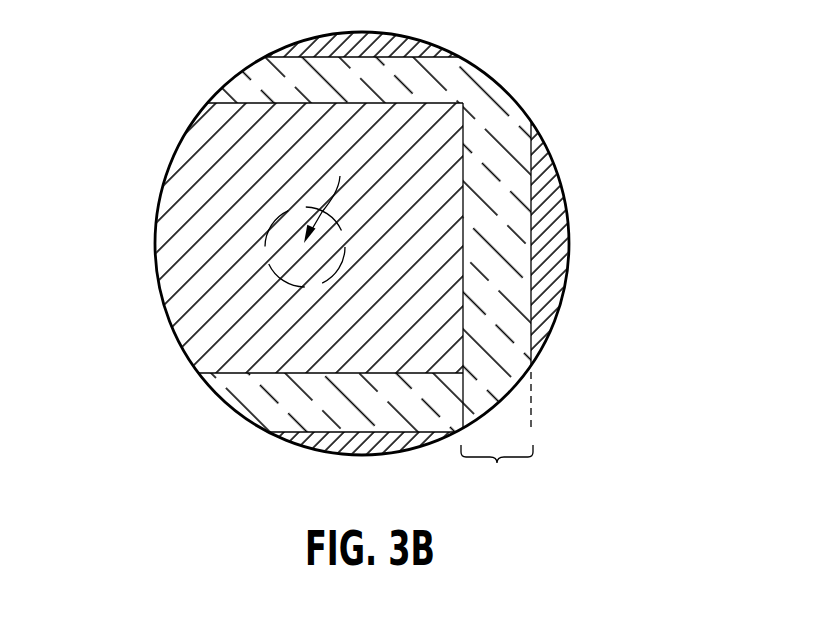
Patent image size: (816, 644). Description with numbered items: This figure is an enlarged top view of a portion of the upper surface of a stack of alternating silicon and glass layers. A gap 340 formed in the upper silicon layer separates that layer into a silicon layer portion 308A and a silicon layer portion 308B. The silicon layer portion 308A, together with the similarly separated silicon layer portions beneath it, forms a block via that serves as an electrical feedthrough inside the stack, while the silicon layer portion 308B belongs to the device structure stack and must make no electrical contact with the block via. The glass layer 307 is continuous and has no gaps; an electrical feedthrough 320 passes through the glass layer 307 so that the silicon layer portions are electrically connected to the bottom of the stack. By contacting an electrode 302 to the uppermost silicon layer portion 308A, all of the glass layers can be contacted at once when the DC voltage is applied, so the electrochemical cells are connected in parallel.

The electrode 302 is at (331, 193).
The glass layer 307 is at (262, 85).
The silicon layer portion 308A is at (172, 238).
The silicon layer portion 308B is at (555, 239).
The electrical feedthrough 320 is at (304, 286).
The gap 340 is at (497, 468).